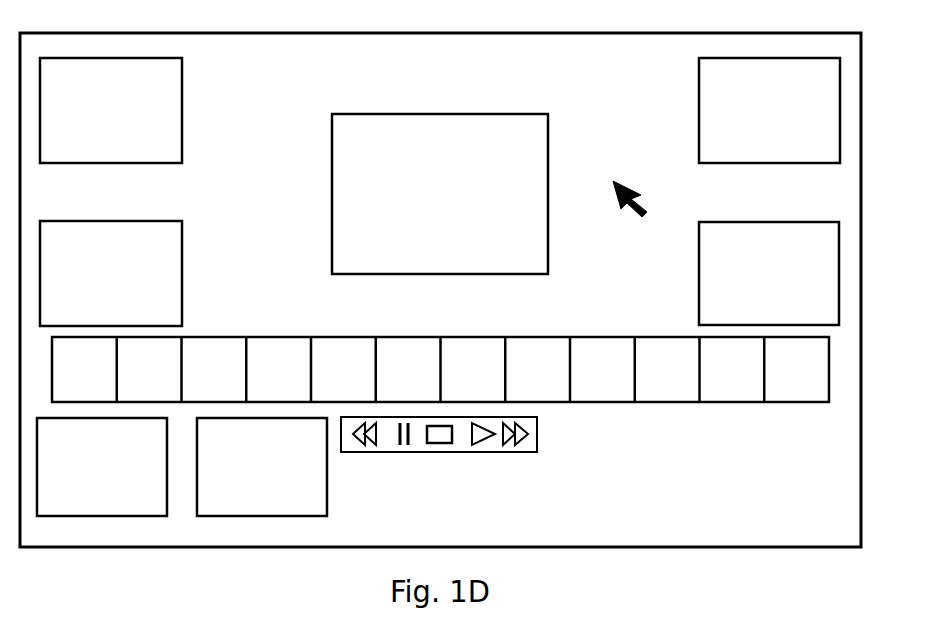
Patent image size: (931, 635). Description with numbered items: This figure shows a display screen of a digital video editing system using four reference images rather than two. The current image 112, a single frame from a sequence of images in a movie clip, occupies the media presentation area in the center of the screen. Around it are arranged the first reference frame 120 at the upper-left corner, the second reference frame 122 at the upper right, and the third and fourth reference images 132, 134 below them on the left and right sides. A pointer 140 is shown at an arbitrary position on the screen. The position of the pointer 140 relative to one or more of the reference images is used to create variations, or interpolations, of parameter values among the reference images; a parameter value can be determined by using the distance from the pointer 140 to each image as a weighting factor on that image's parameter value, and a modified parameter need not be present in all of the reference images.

The media presentation area 112 is at (548, 158).
The first reference frame 120 is at (182, 126).
The second reference frame 122 is at (767, 163).
The third reference image 132 is at (182, 290).
The fourth reference image 134 is at (699, 296).
The pointer 140 is at (657, 201).